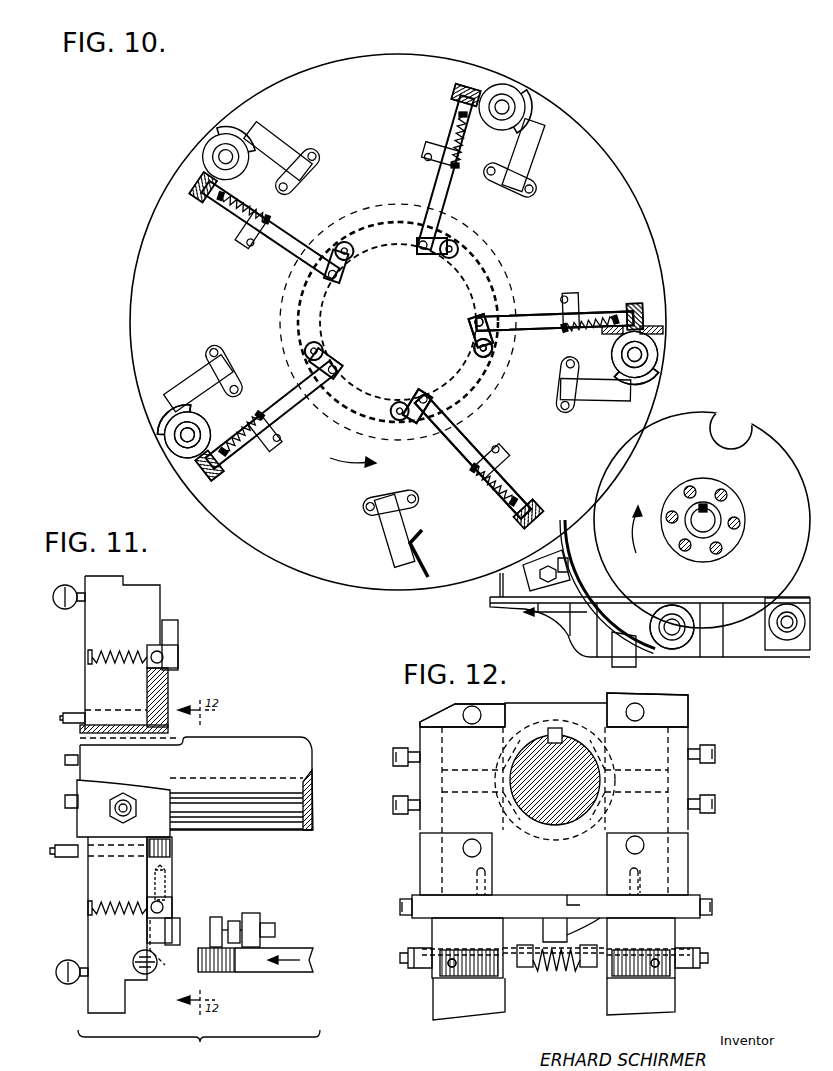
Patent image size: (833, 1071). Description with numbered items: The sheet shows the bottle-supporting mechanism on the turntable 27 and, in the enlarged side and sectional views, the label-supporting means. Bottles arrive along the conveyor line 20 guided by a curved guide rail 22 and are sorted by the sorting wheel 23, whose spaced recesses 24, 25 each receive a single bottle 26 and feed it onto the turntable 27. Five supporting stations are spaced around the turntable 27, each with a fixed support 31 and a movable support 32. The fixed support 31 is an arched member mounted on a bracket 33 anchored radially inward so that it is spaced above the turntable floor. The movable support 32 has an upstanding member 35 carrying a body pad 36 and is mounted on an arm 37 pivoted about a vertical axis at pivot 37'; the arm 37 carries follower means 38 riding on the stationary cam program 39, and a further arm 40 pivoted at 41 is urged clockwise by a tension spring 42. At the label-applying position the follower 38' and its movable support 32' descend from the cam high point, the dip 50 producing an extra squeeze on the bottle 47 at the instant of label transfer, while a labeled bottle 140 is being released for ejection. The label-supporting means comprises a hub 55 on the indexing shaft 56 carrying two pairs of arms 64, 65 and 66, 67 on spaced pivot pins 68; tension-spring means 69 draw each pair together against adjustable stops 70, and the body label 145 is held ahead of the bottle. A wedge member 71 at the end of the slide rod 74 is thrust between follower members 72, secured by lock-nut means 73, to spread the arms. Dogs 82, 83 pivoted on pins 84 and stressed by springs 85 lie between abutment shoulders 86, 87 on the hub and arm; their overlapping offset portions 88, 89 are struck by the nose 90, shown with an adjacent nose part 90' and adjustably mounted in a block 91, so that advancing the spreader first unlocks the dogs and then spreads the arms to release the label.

In FIG. 10, the bottle-conveyor line 20 is at (576, 640).
In FIG. 10, the curved guide rail 22 is at (770, 652).
In FIG. 10, the sorting wheel 23 is at (702, 507).
In FIG. 10, the recess 24 is at (669, 606).
In FIG. 10, the recess 25 is at (747, 428).
In FIG. 10, the bottle 26 is at (692, 618).
In FIG. 10, the turntable 27 is at (376, 584).
In FIG. 10, the fixed support 31 is at (215, 135).
In FIG. 10, the movable support 32 is at (349, 300).
In FIG. 10, the movable support 32' is at (659, 312).
In FIG. 10, the bracket 33 is at (291, 146).
In FIG. 10, the upstanding member 35 is at (543, 507).
In FIG. 10, the body pad 36 is at (650, 318).
In FIG. 10, the arm 37 is at (412, 308).
In FIG. 10, the pivot 37' is at (405, 323).
In FIG. 10, the follower means 38 is at (382, 326).
In FIG. 10, the cam follower 38' is at (466, 352).
In FIG. 10, the cam program 39 is at (368, 250).
In FIG. 10, the further arm 40 is at (590, 300).
In FIG. 10, the pivot 41 is at (424, 157).
In FIG. 10, the tension spring 42 is at (590, 335).
In FIG. 10, the bottle 47 is at (660, 346).
In FIG. 10, the dip 50 is at (467, 331).
In FIG. 11, the hub 55 is at (170, 695).
In FIG. 12, the hub 55 is at (440, 855).
In FIG. 11, the indexing shaft 56 is at (265, 766).
In FIG. 12, the indexing shaft 56 is at (550, 826).
In FIG. 11, the arm 64 is at (85, 632).
In FIG. 12, the arm 64 is at (455, 704).
In FIG. 12, the arm 65 is at (610, 695).
In FIG. 11, the arm 66 is at (88, 1005).
In FIG. 12, the arm 66 is at (433, 1010).
In FIG. 12, the arm 67 is at (680, 1002).
In FIG. 11, the pivot pin 68 is at (95, 712).
In FIG. 12, the pivot pin 68 is at (472, 839).
In FIG. 11, the tension-spring means 69 is at (60, 600).
In FIG. 12, the tension-spring means 69 is at (608, 978).
In FIG. 12, the stop 70 is at (404, 747).
In FIG. 11, the wedge member 71 is at (220, 972).
In FIG. 12, the wedge member 71 is at (558, 972).
In FIG. 12, the follower member 72 is at (530, 968).
In FIG. 11, the lock-nut means 73 is at (147, 975).
In FIG. 12, the lock-nut means 73 is at (420, 970).
In FIG. 11, the slide rod 74 is at (275, 972).
In FIG. 12, the dog 82 is at (522, 895).
In FIG. 12, the dog 83 is at (644, 893).
In FIG. 11, the pin 84 is at (168, 880).
In FIG. 12, the pin 84 is at (474, 890).
In FIG. 11, the spring 85 is at (130, 655).
In FIG. 12, the spring 85 is at (402, 913).
In FIG. 11, the abutment shoulder 86 is at (172, 905).
In FIG. 12, the abutment shoulder 86 is at (422, 885).
In FIG. 11, the abutment shoulder 87 is at (164, 908).
In FIG. 12, the abutment shoulder 87 is at (432, 930).
In FIG. 11, the offset portion 88 is at (180, 930).
In FIG. 12, the offset portion 88 is at (543, 930).
In FIG. 11, the offset portion 89 is at (166, 958).
In FIG. 12, the offset portion 89 is at (590, 930).
In FIG. 11, the nose 90 is at (221, 918).
In FIG. 11, the knob 90' is at (241, 916).
In FIG. 11, the block 91 is at (258, 914).
In FIG. 10, the labeled bottle 140 is at (186, 446).
In FIG. 10, the body label 145 is at (664, 331).